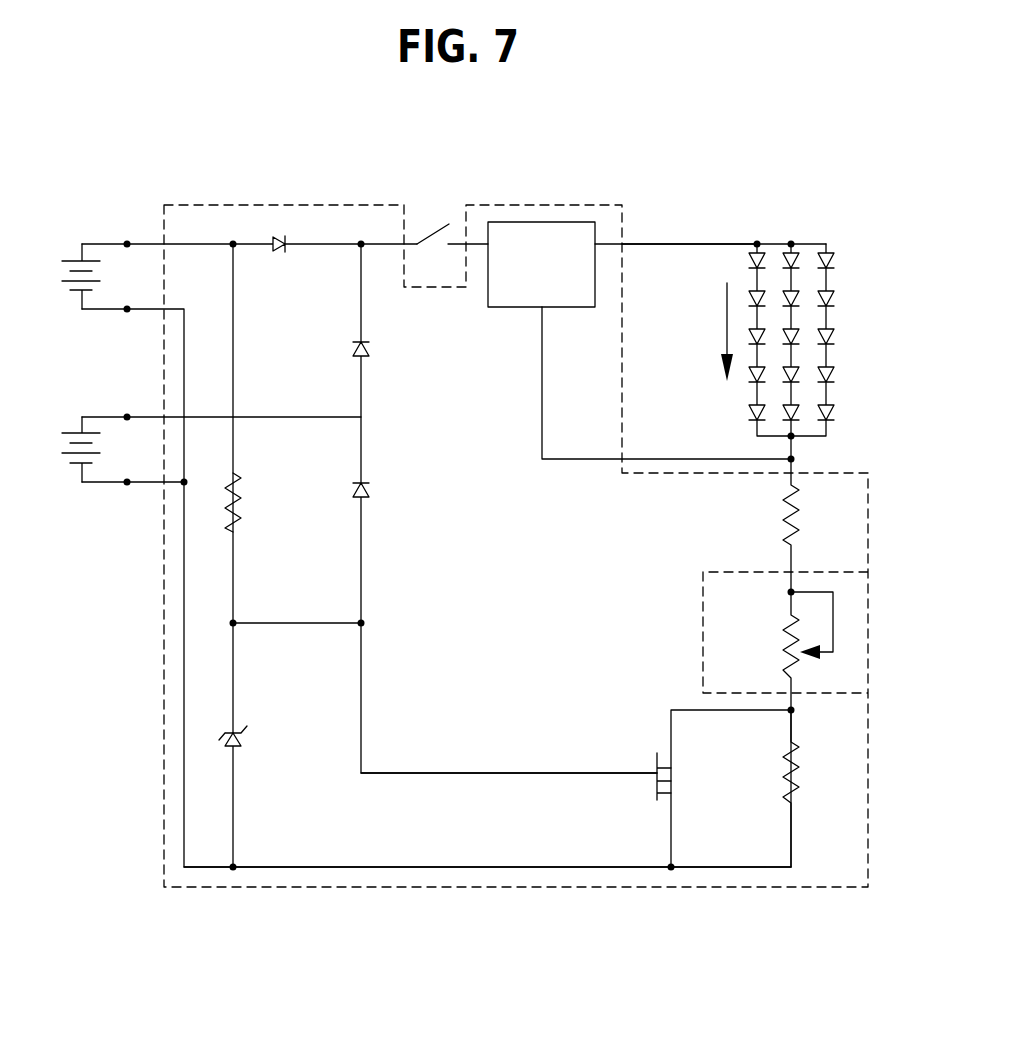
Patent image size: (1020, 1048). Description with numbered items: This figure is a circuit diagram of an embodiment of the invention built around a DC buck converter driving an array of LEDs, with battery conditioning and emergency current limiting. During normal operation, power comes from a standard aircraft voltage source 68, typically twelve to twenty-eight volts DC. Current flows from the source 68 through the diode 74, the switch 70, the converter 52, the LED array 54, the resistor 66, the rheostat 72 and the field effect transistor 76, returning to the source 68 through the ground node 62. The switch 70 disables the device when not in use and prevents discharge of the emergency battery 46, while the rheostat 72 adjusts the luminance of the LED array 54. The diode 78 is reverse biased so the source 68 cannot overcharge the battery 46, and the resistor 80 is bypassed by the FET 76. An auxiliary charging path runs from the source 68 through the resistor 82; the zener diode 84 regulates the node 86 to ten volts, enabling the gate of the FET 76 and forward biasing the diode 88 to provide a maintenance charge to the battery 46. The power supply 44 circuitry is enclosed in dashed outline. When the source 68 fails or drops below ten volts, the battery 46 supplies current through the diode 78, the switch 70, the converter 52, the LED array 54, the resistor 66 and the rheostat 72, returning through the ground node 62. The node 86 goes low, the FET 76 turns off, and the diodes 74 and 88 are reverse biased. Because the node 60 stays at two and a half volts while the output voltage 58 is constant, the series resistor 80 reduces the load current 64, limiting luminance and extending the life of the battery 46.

The power supply 44 is at (251, 205).
The battery 46 is at (72, 432).
The converter 52 is at (539, 222).
The LED array 54 is at (844, 366).
The output voltage 58 is at (663, 243).
The node 60 is at (588, 462).
The ground node 62 is at (443, 867).
The load current 64 is at (727, 340).
The resistor 66 is at (783, 525).
The aircraft voltage source 68 is at (72, 260).
The switch 70 is at (436, 235).
The rheostat 72 is at (783, 640).
The diode 74 is at (287, 248).
The field effect transistor 76 is at (657, 755).
The diode 78 is at (367, 350).
The resistor 80 is at (803, 779).
The resistor 82 is at (241, 490).
The zener diode 84 is at (240, 740).
The node 86 is at (528, 772).
The diode 88 is at (367, 492).